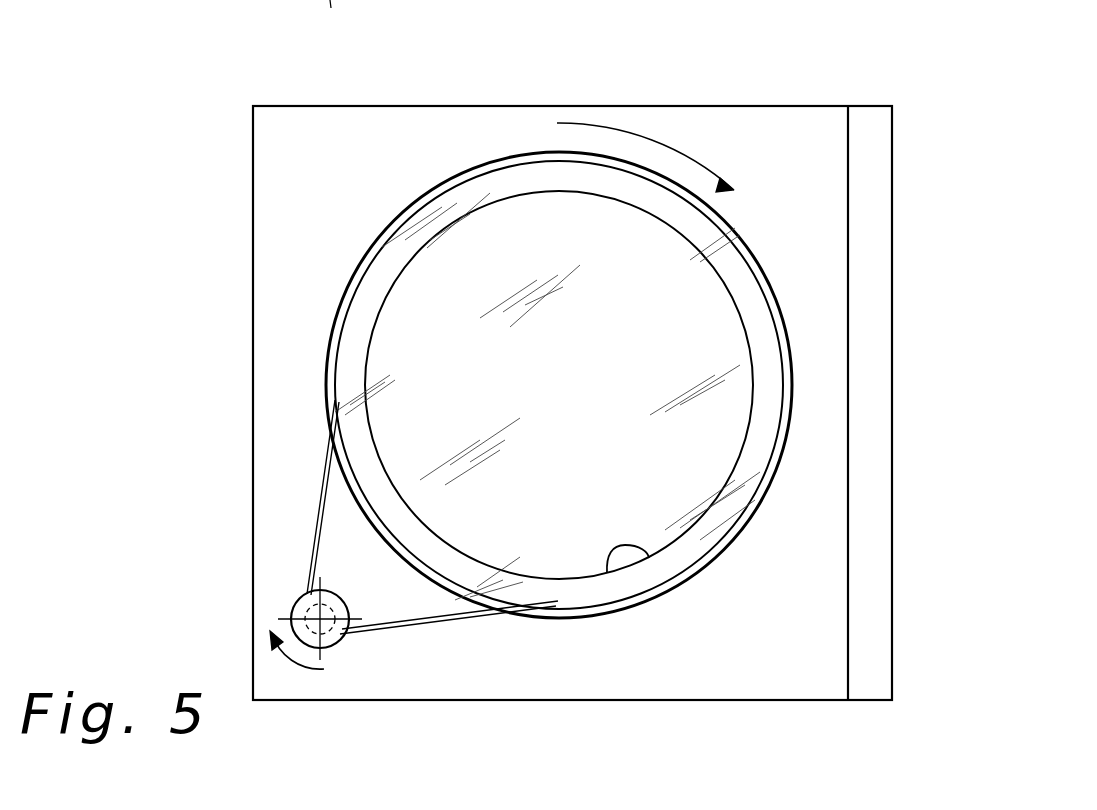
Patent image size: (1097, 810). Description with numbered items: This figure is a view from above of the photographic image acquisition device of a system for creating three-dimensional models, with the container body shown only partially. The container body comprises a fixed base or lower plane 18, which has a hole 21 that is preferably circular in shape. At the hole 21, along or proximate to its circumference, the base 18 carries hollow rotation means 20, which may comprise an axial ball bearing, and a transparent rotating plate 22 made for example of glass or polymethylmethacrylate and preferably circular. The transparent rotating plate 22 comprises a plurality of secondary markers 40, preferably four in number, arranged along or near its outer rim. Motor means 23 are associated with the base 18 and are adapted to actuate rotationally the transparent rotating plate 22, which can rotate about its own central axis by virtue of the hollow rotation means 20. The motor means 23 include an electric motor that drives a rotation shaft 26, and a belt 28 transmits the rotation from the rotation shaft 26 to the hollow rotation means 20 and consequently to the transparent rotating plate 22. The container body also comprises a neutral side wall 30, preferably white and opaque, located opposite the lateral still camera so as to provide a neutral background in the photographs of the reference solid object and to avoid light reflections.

The fixed base 18 is at (790, 645).
The hollow rotation means 20 is at (367, 303).
The hole 21 is at (632, 549).
The transparent rotating plate 22 is at (515, 238).
The motor means 23 is at (346, 642).
The rotation shaft 26 is at (293, 610).
The belt 28 is at (320, 500).
The neutral side wall 30 is at (870, 130).
The secondary markers 40 is at (280, 20).